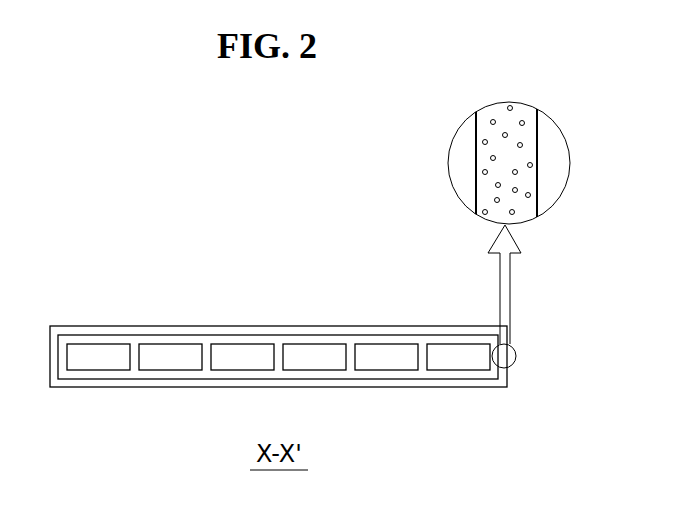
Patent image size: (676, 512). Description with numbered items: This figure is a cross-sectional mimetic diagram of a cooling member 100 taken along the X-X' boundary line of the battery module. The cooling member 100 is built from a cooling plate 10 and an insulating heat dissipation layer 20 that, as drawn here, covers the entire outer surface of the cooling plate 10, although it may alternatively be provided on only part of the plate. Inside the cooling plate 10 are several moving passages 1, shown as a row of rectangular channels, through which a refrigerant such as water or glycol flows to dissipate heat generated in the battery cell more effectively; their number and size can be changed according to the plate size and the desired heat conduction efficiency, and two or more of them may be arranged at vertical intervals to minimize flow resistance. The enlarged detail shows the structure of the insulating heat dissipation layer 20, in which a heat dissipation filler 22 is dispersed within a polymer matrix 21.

The cooling member 100 is at (97, 272).
The cooling plate 10 is at (350, 342).
The moving passage 1 is at (243, 353).
The insulating heat dissipation layer 20 is at (173, 336).
The polymer matrix 21 is at (478, 155).
The heat dissipation filler 22 is at (490, 122).